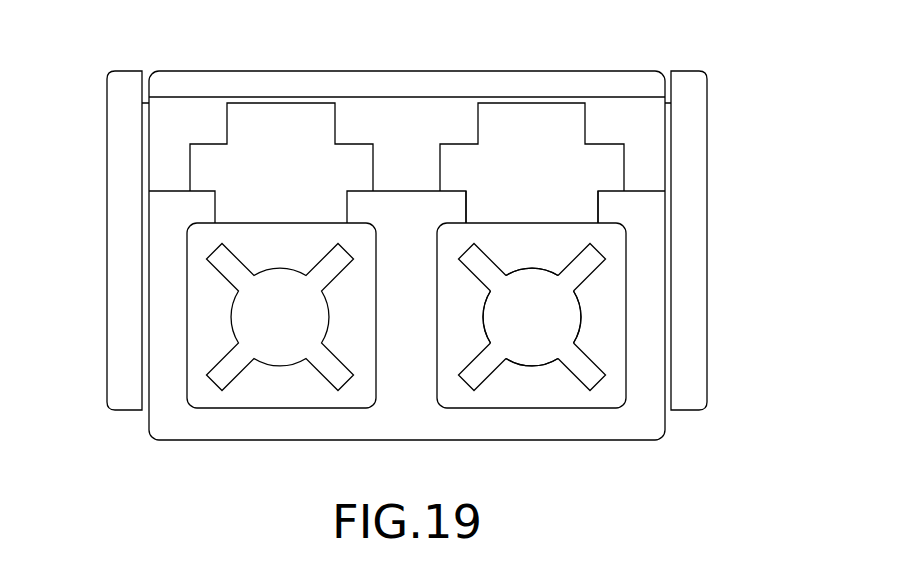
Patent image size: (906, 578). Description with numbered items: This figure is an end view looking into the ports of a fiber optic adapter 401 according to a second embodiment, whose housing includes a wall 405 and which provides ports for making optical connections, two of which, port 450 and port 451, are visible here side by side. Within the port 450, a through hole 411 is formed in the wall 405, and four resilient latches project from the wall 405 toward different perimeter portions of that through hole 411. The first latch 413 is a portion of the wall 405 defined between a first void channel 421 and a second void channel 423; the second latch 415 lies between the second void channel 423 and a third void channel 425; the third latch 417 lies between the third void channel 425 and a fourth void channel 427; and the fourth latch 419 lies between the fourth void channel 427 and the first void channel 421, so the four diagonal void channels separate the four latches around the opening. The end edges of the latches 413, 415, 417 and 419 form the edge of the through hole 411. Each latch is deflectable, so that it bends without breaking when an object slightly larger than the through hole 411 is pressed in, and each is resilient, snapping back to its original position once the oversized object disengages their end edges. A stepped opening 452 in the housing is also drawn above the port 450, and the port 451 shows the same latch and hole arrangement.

The fiber optic adapter 401 is at (476, 52).
The wall 405 is at (498, 240).
The through hole 411 is at (543, 313).
The first latch 413 is at (623, 327).
The second latch 415 is at (553, 258).
The third latch 417 is at (480, 333).
The fourth latch 419 is at (550, 398).
The first void channel 421 is at (597, 378).
The second void channel 423 is at (597, 255).
The third void channel 425 is at (482, 267).
The fourth void channel 427 is at (478, 378).
The port 450 is at (616, 354).
The port 451 is at (212, 346).
The stepped latch opening 452 is at (602, 168).